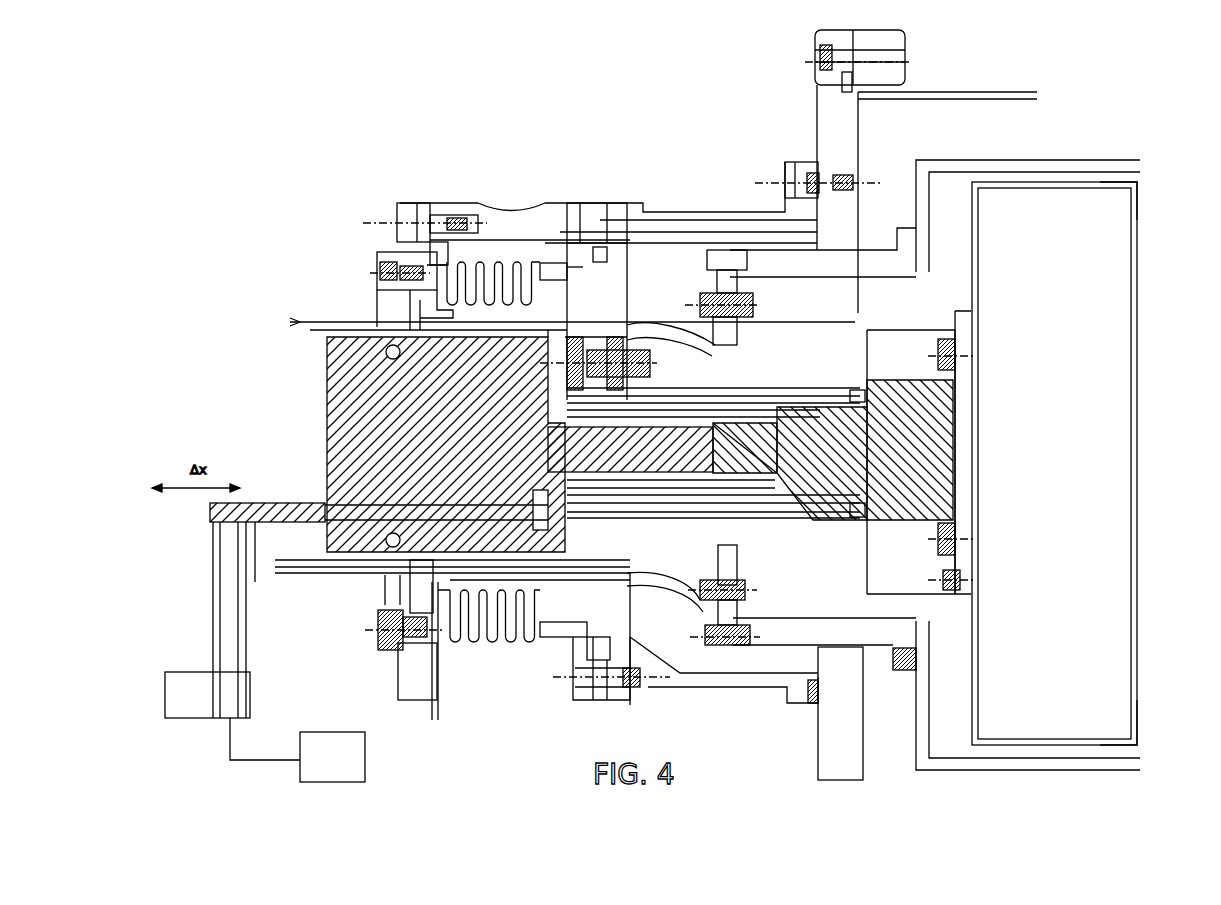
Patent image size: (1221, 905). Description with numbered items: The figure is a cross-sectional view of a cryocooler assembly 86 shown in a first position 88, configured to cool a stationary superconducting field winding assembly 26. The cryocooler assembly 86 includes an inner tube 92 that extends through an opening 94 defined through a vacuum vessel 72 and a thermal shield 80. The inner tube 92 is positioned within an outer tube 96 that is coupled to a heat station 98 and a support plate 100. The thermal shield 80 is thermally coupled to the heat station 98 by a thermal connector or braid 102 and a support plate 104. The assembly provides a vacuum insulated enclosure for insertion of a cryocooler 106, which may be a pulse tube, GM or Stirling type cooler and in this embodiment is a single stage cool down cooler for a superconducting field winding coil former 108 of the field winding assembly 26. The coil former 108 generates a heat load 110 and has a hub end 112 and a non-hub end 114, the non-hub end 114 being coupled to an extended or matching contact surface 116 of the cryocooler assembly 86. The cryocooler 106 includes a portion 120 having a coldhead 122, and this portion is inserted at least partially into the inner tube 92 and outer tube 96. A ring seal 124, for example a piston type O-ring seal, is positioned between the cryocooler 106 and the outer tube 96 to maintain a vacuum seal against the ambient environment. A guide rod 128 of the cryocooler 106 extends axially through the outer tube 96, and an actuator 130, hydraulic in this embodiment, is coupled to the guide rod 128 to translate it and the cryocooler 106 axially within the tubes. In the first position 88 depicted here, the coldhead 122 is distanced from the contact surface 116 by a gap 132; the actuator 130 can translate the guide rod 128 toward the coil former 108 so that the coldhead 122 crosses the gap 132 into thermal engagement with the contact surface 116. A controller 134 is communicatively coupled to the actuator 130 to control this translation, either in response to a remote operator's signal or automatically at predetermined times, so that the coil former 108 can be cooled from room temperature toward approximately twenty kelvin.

The stationary superconducting field winding assembly 26 is at (1150, 737).
The vacuum vessel 72 is at (806, 30).
The thermal shield 80 is at (925, 155).
The cryocooler assembly 86 is at (238, 152).
The first position 88 is at (509, 662).
The inner tube 92 is at (733, 515).
The opening 94 is at (845, 275).
The outer tube 96 is at (553, 305).
The heat station 98 is at (600, 267).
The support plate 100 is at (426, 700).
The thermal connector or braid 102 is at (678, 318).
The support plate 104 is at (773, 699).
The cryocooler 106 is at (338, 328).
The superconducting field winding coil former 108 is at (1137, 268).
The heat load 110 is at (1054, 463).
The hub end 112 is at (1160, 240).
The non-hub end 114 is at (960, 272).
The contact surface 116 is at (878, 350).
The portion 120 is at (683, 440).
The coldhead 122 is at (793, 408).
The ring seal 124 is at (369, 585).
The guide rod 128 is at (318, 530).
The actuator 130 is at (166, 688).
The gap 132 is at (793, 497).
The controller 134 is at (365, 757).